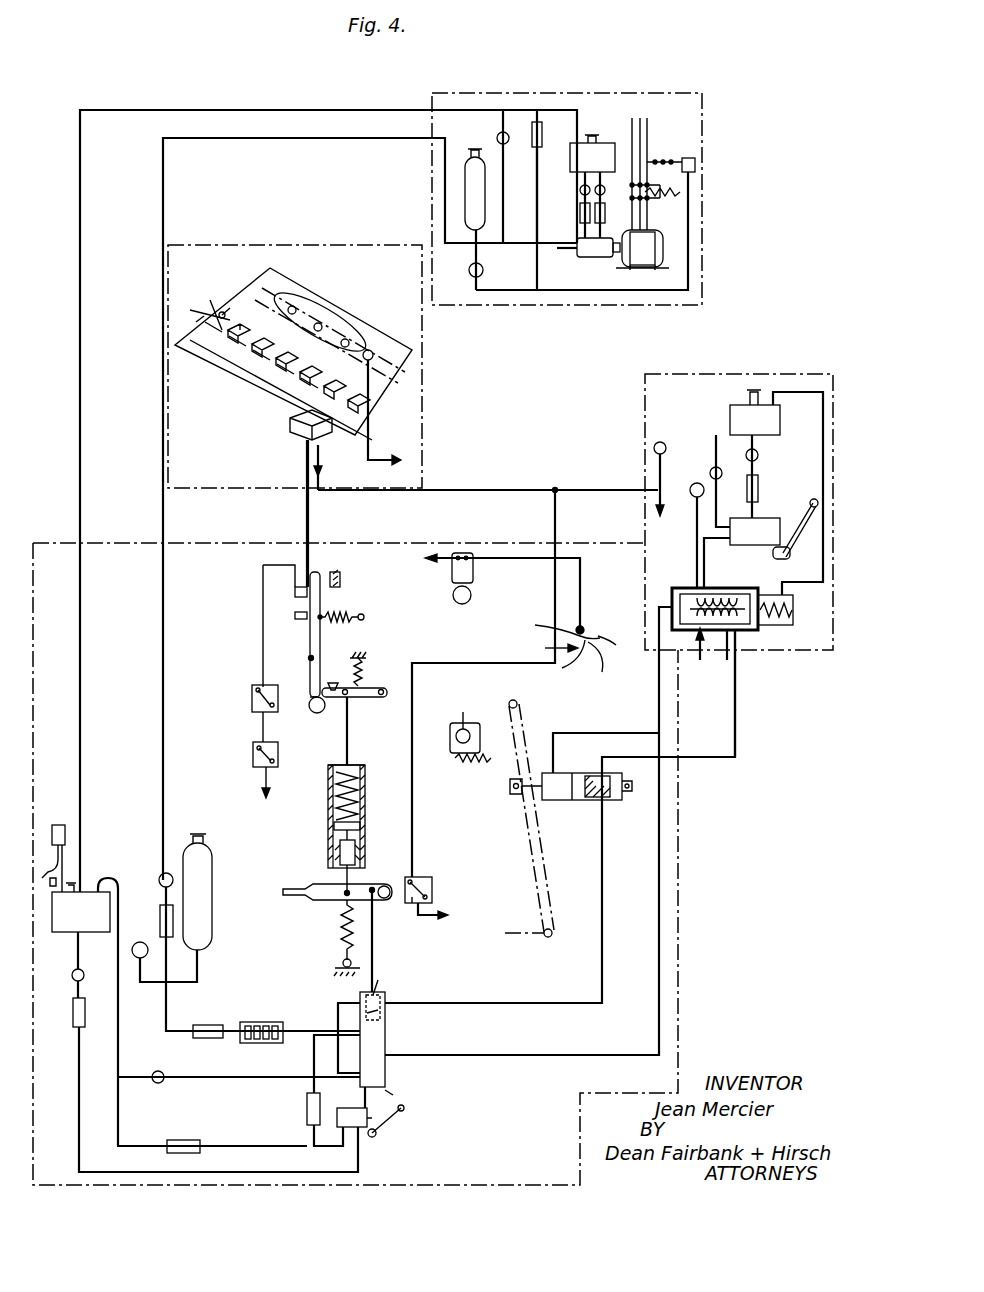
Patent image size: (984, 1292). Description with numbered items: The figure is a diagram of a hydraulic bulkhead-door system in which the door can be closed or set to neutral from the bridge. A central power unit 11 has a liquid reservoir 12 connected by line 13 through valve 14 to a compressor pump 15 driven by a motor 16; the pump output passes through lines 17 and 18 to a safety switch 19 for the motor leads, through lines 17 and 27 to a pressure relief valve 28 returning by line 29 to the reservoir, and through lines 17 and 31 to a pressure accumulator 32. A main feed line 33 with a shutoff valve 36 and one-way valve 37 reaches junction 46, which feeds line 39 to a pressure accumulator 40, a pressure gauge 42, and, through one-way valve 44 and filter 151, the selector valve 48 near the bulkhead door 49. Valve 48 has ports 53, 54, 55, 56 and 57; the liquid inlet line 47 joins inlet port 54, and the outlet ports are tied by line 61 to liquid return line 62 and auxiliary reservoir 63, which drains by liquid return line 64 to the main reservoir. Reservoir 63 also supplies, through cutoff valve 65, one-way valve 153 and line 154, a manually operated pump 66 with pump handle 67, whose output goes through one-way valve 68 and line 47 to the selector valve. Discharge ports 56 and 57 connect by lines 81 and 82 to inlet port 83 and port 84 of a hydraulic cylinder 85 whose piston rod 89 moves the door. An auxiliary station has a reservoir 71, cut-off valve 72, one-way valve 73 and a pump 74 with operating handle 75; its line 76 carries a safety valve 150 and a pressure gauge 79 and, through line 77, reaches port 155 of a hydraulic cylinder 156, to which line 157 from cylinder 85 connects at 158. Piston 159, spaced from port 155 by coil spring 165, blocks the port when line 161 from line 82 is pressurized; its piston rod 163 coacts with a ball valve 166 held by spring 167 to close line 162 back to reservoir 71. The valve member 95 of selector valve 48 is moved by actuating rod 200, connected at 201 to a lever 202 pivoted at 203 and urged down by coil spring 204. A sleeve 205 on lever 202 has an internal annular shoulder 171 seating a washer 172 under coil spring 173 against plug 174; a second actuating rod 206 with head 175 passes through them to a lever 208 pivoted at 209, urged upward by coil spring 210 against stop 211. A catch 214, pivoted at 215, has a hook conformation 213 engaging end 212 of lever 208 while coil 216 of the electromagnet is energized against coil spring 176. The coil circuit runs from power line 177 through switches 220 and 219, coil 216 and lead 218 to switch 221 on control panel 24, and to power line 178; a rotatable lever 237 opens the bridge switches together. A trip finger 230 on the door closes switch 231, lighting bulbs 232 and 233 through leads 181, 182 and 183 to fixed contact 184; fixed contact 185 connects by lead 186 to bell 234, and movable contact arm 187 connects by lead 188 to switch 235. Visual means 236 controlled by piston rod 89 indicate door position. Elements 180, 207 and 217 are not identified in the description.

The central power unit 11 is at (668, 93).
The liquid reservoir 12 is at (598, 142).
The line 13 is at (580, 190).
The valve 14 is at (580, 213).
The compressor pump 15 is at (596, 258).
The motor 16 is at (642, 262).
The line 17 is at (572, 255).
The line 18 is at (537, 276).
The safety switch 19 is at (697, 165).
The control panel 24 is at (232, 400).
The line 27 is at (537, 180).
The pressure relief valve 28 is at (542, 134).
The line 29 is at (553, 108).
The line 31 is at (470, 273).
The pressure accumulator 32 is at (478, 160).
The main feed line 33 is at (165, 195).
The shutoff valve 36 is at (160, 878).
The one-way valve 37 is at (174, 916).
The line 39 is at (205, 965).
The pressure accumulator 40 is at (206, 860).
The pressure gauge 42 is at (139, 942).
The one-way valve 44 is at (205, 1040).
The junction 46 is at (162, 992).
The liquid inlet line 47 is at (310, 1025).
The selector valve 48 is at (393, 1031).
The bulkhead door 49 is at (593, 668).
The port 53 is at (333, 968).
The liquid inlet port 54 is at (316, 1042).
The port 55 is at (347, 1107).
The discharge port 56 is at (383, 1000).
The discharge port 57 is at (390, 1070).
The line 61 is at (330, 1005).
The liquid return line 62 is at (228, 1084).
The auxiliary reservoir 63 is at (64, 935).
The liquid return line 64 is at (81, 200).
The cutoff valve 65 is at (72, 976).
The manually operated pump 66 is at (370, 1136).
The pump handle 67 is at (404, 1112).
The one-way valve 68 is at (306, 1112).
The reservoir 71 is at (735, 408).
The cut-off valve 72 is at (759, 456).
The one-way valve 73 is at (759, 488).
The pump 74 is at (754, 546).
The operating handle 75 is at (806, 515).
The line 76 is at (717, 545).
The line 77 is at (702, 542).
The pressure gauge 79 is at (694, 484).
The line 81 is at (490, 1002).
The line 82 is at (661, 840).
The inlet port 83 is at (606, 801).
The port 84 is at (554, 772).
The hydraulic cylinder 85 is at (566, 801).
The piston rod 89 is at (528, 768).
The valve member 95 is at (399, 971).
The safety valve 150 is at (712, 462).
The filter 151 is at (245, 1022).
The one-way valve 153 is at (74, 1022).
The line 154 is at (225, 1172).
The port 155 is at (692, 588).
The hydraulic cylinder 156 is at (699, 660).
The line 157 is at (737, 700).
The connection 158 is at (726, 672).
The piston 159 is at (672, 602).
The line 161 is at (658, 700).
The line 162 is at (822, 420).
The piston rod 163 is at (717, 589).
The coil spring 165 is at (742, 632).
The ball valve 166 is at (768, 626).
The spring 167 is at (793, 606).
The internal annular shoulder 171 is at (338, 845).
The washer 172 is at (334, 825).
The coil spring 173 is at (336, 800).
The plug 174 is at (328, 768).
The head 175 is at (333, 862).
The coil spring 176 is at (340, 614).
The power line 177 is at (262, 790).
The power line 178 is at (320, 478).
The link 180 is at (538, 598).
The lead 181 is at (412, 492).
The lead 182 is at (560, 488).
The lead 183 is at (558, 520).
The fixed contact 184 is at (555, 625).
The fixed contact 185 is at (584, 629).
The lead 186 is at (526, 556).
The movable contact arm 187 is at (536, 628).
The lead 188 is at (456, 660).
The actuating rod 200 is at (374, 948).
The connection 201 is at (385, 885).
The lever 202 is at (318, 900).
The pivot 203 is at (380, 902).
The coil spring 204 is at (340, 938).
The sleeve 205 is at (330, 783).
The second actuating rod 206 is at (349, 757).
The abutment 207 is at (366, 660).
The lever 208 is at (355, 722).
The pivot 209 is at (379, 700).
The coil spring 210 is at (362, 674).
The stop 211 is at (332, 680).
The end 212 is at (308, 705).
The hook conformation 213 is at (316, 714).
The catch 214 is at (308, 640).
The pivot 215 is at (308, 658).
The coil 216 is at (294, 593).
The stop 217 is at (340, 576).
The lead 218 is at (305, 522).
The switch 219 is at (251, 698).
The switch 220 is at (252, 757).
The switch 221 is at (290, 440).
The trip finger 230 is at (598, 638).
The switch 231 is at (541, 645).
The bulb 232 is at (370, 350).
The bulb 233 is at (654, 447).
The bell 234 is at (473, 592).
The switch 235 is at (433, 890).
The visual means 236 is at (463, 723).
The rotatable lever 237 is at (230, 298).